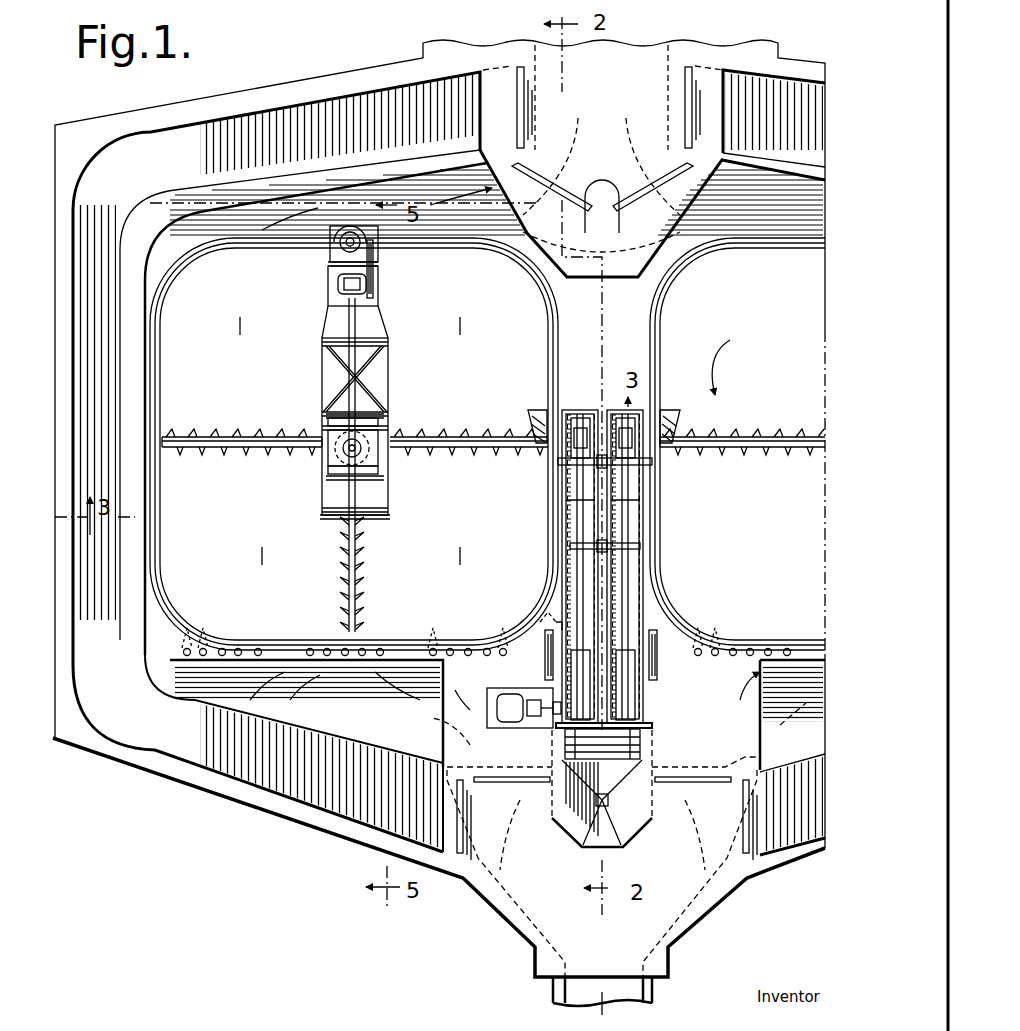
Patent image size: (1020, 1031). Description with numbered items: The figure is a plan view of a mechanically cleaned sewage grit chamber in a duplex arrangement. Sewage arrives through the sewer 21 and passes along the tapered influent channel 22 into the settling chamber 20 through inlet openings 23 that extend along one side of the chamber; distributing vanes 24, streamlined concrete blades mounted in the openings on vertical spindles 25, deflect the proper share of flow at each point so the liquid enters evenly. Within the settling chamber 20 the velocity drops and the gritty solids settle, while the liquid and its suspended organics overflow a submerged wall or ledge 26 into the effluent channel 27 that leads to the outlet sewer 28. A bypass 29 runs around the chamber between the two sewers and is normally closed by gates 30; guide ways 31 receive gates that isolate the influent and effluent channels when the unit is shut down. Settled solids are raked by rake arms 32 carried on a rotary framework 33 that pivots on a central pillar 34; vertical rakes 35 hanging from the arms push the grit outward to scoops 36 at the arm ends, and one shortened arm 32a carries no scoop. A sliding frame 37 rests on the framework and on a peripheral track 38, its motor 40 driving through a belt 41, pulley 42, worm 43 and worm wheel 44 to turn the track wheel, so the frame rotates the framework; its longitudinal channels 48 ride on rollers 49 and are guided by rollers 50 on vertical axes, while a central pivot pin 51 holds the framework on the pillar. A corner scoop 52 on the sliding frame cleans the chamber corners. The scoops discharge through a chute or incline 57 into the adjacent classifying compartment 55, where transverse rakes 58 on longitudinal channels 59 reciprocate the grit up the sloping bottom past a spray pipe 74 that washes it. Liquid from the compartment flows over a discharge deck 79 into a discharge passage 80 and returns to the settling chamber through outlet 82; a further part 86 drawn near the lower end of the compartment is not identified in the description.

The settling chamber 20 is at (487, 444).
The sewer 21 is at (615, 985).
The influent channel 22 is at (497, 715).
The inlet openings 23 is at (742, 648).
The distributing vanes 24 is at (785, 648).
The vertical spindles 25 is at (760, 662).
The submerged wall or ledge 26 is at (470, 252).
The effluent channel 27 is at (455, 222).
The outlet sewer 28 is at (598, 80).
The bypass 29 is at (190, 755).
The gates 30 is at (746, 840).
The guide ways 31 is at (680, 782).
The rake arms 32 is at (340, 532).
The arm 32a is at (356, 330).
The rotary framework 33 is at (326, 508).
The pillar 34 is at (388, 450).
The rakes 35 is at (345, 585).
The scoop 36 is at (345, 614).
The sliding frame 37 is at (390, 368).
The track 38 is at (560, 348).
The motor 40 is at (330, 260).
The belt 41 is at (367, 284).
The pulley 42 is at (373, 296).
The worm 43 is at (378, 266).
The worm wheel 44 is at (354, 236).
The longitudinal channels 48 is at (322, 378).
The rollers 49 is at (386, 470).
The rollers 50 is at (386, 480).
The central pivot pin 51 is at (326, 452).
The scoop 52 is at (338, 282).
The classifying compartment 55 is at (585, 408).
The chute or incline 57 is at (672, 410).
The rakes 58 is at (568, 470).
The longitudinal channels 59 is at (568, 500).
The spray pipe 74 is at (585, 548).
The discharge deck 79 is at (560, 668).
The discharge passage 80 is at (556, 648).
The outlet 82 is at (530, 615).
The support 86 is at (546, 630).